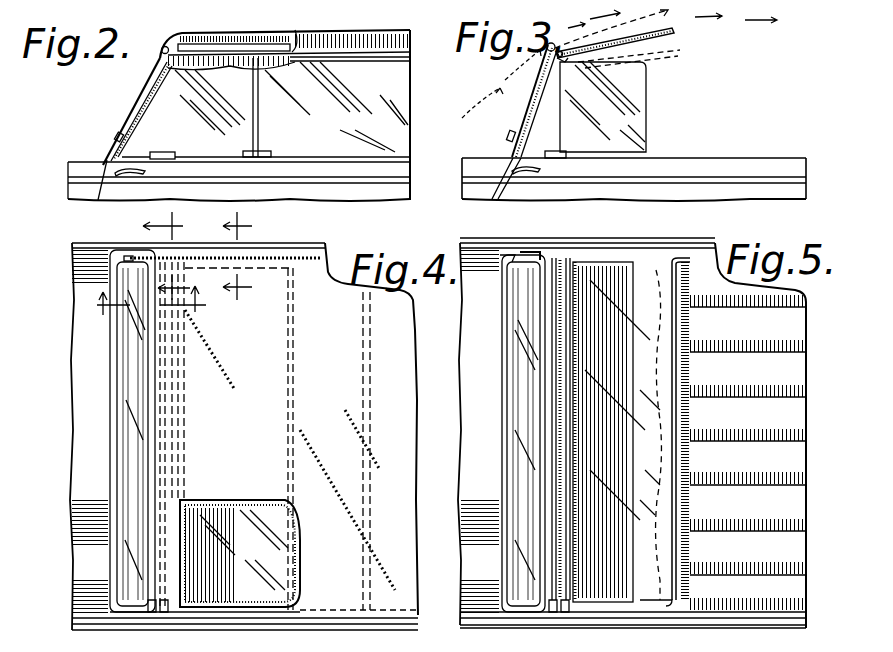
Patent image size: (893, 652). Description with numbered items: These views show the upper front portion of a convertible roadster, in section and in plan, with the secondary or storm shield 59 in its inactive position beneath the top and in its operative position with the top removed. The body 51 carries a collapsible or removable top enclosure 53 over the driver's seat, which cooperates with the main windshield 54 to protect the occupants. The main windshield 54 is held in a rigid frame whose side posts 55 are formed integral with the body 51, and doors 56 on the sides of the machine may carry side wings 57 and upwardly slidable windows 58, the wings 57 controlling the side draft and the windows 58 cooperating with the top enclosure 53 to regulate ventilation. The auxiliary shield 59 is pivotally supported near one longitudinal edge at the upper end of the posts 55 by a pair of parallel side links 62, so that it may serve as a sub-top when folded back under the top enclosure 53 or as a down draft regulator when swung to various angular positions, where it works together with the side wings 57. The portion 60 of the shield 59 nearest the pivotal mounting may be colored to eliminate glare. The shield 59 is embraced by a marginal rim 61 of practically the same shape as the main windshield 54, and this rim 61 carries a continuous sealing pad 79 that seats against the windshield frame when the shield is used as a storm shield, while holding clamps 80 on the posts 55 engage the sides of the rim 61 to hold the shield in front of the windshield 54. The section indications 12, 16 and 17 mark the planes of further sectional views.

In FIG. 4, the section line 12- 12 is at (148, 312).
In FIG. 4, the section line 16- 16 is at (251, 256).
In FIG. 4, the section line 17- 17 is at (178, 256).
In FIG. 2, the body 51 is at (80, 168).
In FIG. 3, the body 51 is at (476, 165).
In FIG. 4, the body 51 is at (93, 481).
In FIG. 5, the body 51 is at (480, 480).
In FIG. 2, the top enclosure 53 is at (370, 42).
In FIG. 4, the top enclosure 53 is at (390, 412).
In FIG. 5, the top enclosure 53 is at (615, 433).
In FIG. 2, the main windshield 54 is at (140, 88).
In FIG. 3, the main windshield 54 is at (540, 93).
In FIG. 4, the main windshield 54 is at (130, 555).
In FIG. 5, the main windshield 54 is at (520, 318).
In FIG. 2, the side posts 55 is at (134, 122).
In FIG. 3, the side posts 55 is at (530, 96).
In FIG. 4, the side posts 55 is at (141, 615).
In FIG. 5, the side posts 55 is at (537, 228).
In FIG. 2, the doors 56 is at (323, 192).
In FIG. 3, the doors 56 is at (752, 140).
In FIG. 4, the doors 56 is at (352, 632).
In FIG. 5, the doors 56 is at (658, 248).
In FIG. 2, the side wings 57 is at (235, 106).
In FIG. 3, the side wings 57 is at (630, 110).
In FIG. 2, the windows 58 is at (336, 107).
In FIG. 2, the auxiliary deflector or storm shield 59 is at (286, 60).
In FIG. 3, the auxiliary deflector or storm shield 59 is at (676, 34).
In FIG. 4, the auxiliary deflector or storm shield 59 is at (262, 538).
In FIG. 5, the auxiliary deflector or storm shield 59 is at (640, 512).
In FIG. 3, the portion of the auxiliary shield 60 is at (563, 60).
In FIG. 4, the portion of the auxiliary shield 60 is at (212, 512).
In FIG. 5, the portion of the auxiliary shield 60 is at (620, 386).
In FIG. 5, the marginal rim 61 is at (683, 555).
In FIG. 5, the side links 62 is at (560, 258).
In FIG. 2, the sealing pad 79 is at (246, 45).
In FIG. 4, the sealing pad 79 is at (292, 563).
In FIG. 5, the sealing pad 79 is at (678, 462).
In FIG. 2, the holding clamps 80 is at (118, 137).
In FIG. 3, the holding clamps 80 is at (520, 138).
In FIG. 4, the holding clamps 80 is at (128, 256).
In FIG. 5, the holding clamps 80 is at (505, 255).